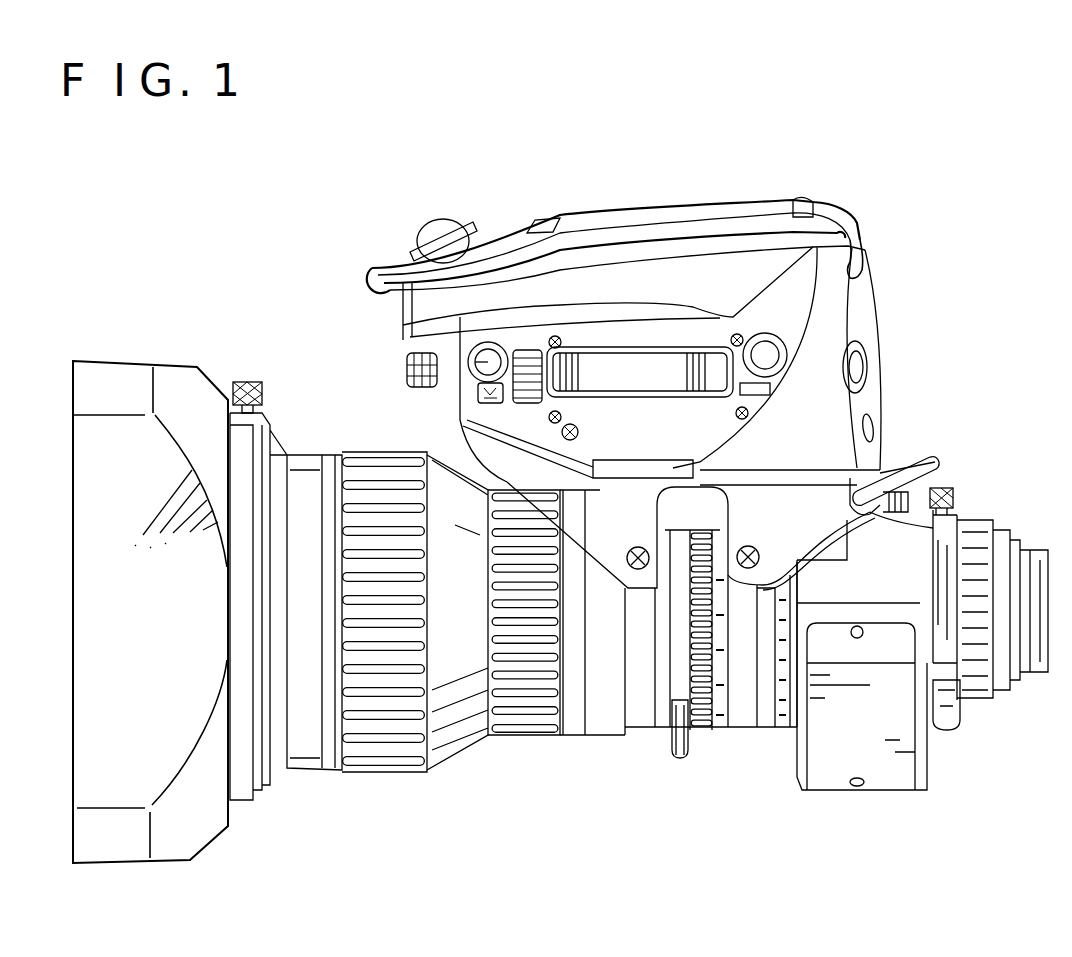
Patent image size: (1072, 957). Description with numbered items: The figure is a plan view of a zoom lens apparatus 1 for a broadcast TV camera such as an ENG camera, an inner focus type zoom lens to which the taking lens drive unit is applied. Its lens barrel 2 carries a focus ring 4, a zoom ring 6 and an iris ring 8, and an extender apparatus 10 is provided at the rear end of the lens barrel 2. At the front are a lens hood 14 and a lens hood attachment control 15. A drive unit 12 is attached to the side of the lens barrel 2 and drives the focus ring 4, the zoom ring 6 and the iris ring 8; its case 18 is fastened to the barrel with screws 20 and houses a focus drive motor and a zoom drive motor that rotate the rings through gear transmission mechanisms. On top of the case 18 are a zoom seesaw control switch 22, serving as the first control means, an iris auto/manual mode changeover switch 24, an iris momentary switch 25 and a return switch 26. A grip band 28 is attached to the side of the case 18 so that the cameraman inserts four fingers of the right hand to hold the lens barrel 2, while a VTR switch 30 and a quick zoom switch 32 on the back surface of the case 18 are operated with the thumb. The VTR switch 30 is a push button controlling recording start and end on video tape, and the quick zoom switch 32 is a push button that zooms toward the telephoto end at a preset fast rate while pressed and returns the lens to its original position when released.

The zoom lens apparatus 1 is at (322, 315).
The lens barrel 2 is at (472, 765).
The focus ring 4 is at (580, 737).
The zoom ring 6 is at (660, 735).
The iris ring 8 is at (770, 738).
The extender apparatus 10 is at (893, 765).
The drive unit 12 is at (583, 277).
The lens hood 14 is at (108, 370).
The lens hood attachment control 15 is at (248, 380).
The case 18 is at (470, 445).
The screws 20 is at (640, 546).
The zoom seesaw control switch 22 is at (635, 350).
The iris auto/manual mode changeover switch 24 is at (528, 350).
The iris momentary switch 25 is at (410, 368).
The return switch 26 is at (766, 352).
The grip band 28 is at (781, 225).
The VTR switch 30 is at (868, 367).
The quick zoom switch 32 is at (876, 426).